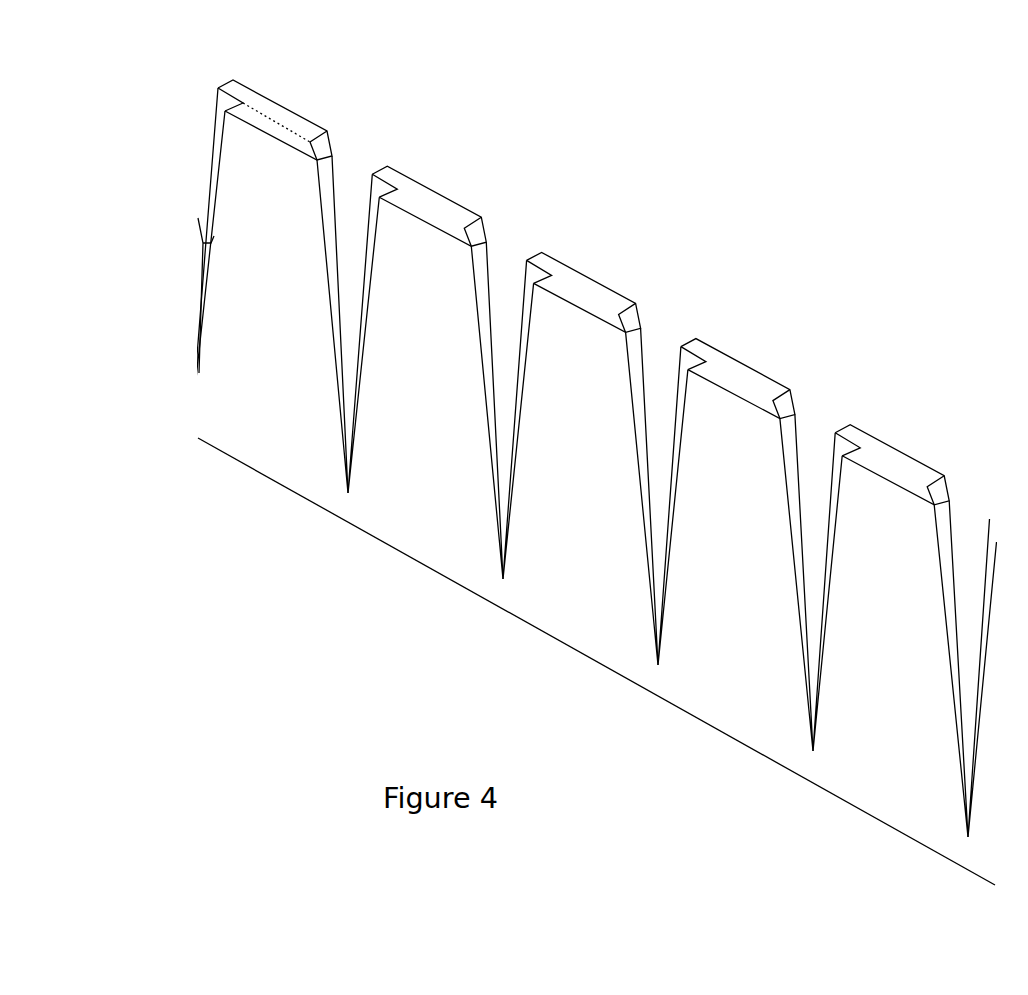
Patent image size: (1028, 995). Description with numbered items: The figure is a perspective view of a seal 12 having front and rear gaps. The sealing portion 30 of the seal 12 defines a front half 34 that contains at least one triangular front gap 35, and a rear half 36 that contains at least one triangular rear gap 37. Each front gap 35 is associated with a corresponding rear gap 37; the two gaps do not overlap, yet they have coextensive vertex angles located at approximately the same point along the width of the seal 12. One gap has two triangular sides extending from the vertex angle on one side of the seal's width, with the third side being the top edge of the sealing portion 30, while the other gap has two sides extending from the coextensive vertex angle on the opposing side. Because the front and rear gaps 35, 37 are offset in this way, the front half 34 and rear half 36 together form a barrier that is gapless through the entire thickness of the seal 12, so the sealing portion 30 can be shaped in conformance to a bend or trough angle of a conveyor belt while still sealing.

The seal 12 is at (645, 150).
The sealing portion 30 is at (596, 661).
The front half 34 is at (267, 128).
The front gap 35 is at (353, 232).
The rear half 36 is at (280, 112).
The rear gap 37 is at (508, 240).